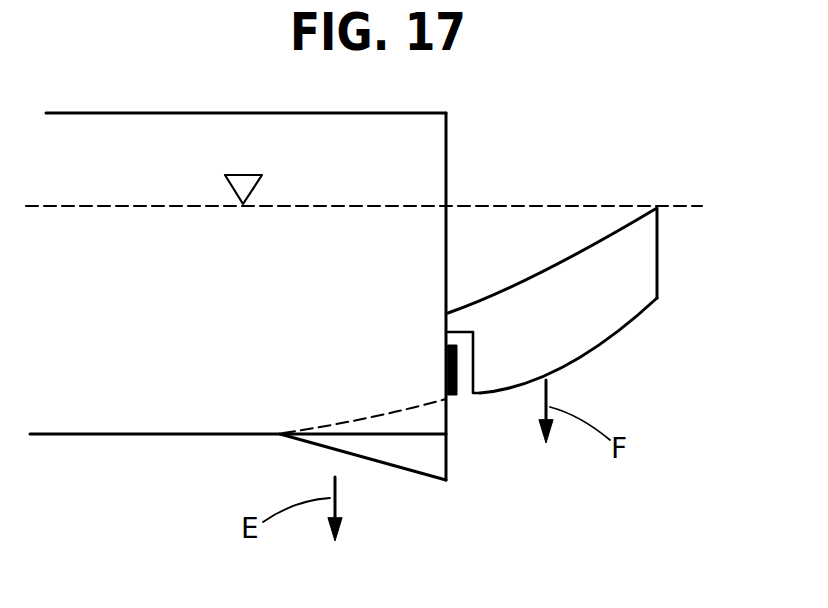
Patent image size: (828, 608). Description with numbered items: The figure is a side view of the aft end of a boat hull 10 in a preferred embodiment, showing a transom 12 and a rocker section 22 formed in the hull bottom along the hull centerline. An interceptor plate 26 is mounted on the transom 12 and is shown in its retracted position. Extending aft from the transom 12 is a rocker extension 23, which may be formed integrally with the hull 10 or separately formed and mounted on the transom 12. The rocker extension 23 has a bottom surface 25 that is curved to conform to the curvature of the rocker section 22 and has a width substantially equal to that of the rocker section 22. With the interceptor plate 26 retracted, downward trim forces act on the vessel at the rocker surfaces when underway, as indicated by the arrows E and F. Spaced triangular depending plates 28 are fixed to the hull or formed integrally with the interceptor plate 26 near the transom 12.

The boat hull 10 is at (100, 137).
The transom 12 is at (448, 237).
The rocker section 22 is at (388, 413).
The rocker extension 23 is at (637, 278).
The bottom surface 25 is at (592, 350).
The interceptor plate 26 is at (452, 395).
The triangular depending plates 28 is at (420, 453).